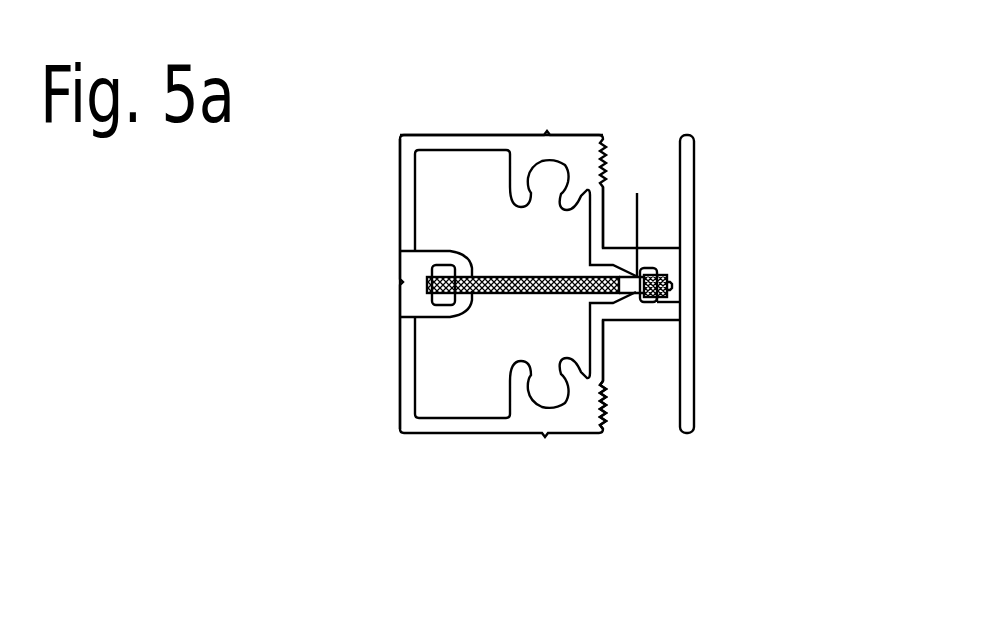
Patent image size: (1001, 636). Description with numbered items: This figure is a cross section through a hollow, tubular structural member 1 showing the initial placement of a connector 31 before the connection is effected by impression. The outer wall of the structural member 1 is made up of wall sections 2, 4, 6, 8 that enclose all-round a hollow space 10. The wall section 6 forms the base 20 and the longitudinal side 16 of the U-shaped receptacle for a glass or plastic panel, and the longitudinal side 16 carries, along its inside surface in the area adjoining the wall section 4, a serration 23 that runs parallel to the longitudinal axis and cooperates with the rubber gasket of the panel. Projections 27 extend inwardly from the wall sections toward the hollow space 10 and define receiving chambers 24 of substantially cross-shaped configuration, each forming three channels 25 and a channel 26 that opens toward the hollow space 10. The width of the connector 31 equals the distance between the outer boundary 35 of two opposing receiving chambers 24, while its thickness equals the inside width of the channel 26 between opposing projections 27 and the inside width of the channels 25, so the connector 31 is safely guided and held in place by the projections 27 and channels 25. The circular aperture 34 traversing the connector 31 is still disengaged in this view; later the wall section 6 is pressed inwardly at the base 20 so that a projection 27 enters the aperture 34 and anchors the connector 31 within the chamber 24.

The structural member 1 is at (392, 165).
The wall section 2 is at (405, 367).
The wall section 4 is at (490, 138).
The wall section 6 is at (658, 295).
The wall section 8 is at (482, 420).
The hollow space 10 is at (482, 232).
The longitudinal side 16 is at (598, 205).
The base 20 is at (617, 310).
The serration 23 is at (598, 412).
The receiving chamber 24 is at (665, 274).
The channel 25 is at (432, 267).
The channel 26 is at (650, 268).
The projection 27 is at (698, 540).
The connector 31 is at (497, 294).
The aperture 34 is at (676, 303).
The outer boundary 35 is at (672, 290).